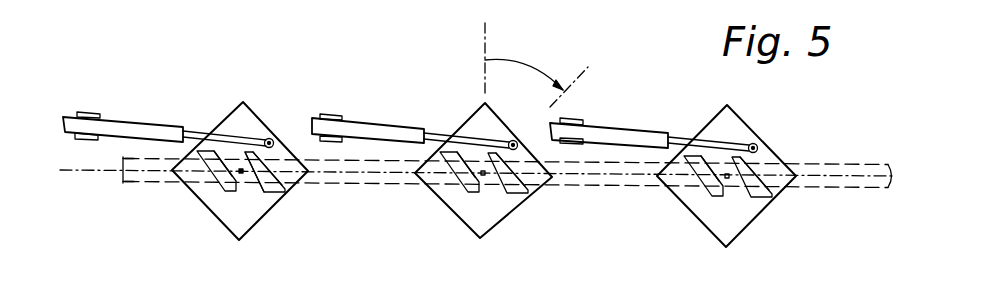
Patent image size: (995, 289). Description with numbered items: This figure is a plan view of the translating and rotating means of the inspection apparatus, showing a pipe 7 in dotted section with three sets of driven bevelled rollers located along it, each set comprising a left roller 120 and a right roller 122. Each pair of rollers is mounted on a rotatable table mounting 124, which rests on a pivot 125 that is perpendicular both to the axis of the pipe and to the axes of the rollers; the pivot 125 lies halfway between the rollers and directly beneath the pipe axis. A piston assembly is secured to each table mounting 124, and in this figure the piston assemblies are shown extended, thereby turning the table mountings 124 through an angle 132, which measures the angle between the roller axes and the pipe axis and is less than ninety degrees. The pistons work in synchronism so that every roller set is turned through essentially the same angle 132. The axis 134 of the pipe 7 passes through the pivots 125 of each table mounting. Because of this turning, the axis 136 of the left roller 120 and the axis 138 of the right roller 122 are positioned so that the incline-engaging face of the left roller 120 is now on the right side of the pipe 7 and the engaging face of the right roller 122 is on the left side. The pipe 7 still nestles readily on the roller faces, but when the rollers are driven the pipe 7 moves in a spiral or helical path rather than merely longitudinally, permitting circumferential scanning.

The pipe 7 is at (390, 183).
The left roller 120 is at (241, 173).
The right roller 122 is at (270, 190).
The table mounting 124 is at (240, 101).
The pivot 125 is at (243, 177).
The angle 132 is at (525, 62).
The axis of pipe 134 is at (90, 169).
The axis of roller 120 136 is at (220, 172).
The axis of roller 122 138 is at (297, 160).